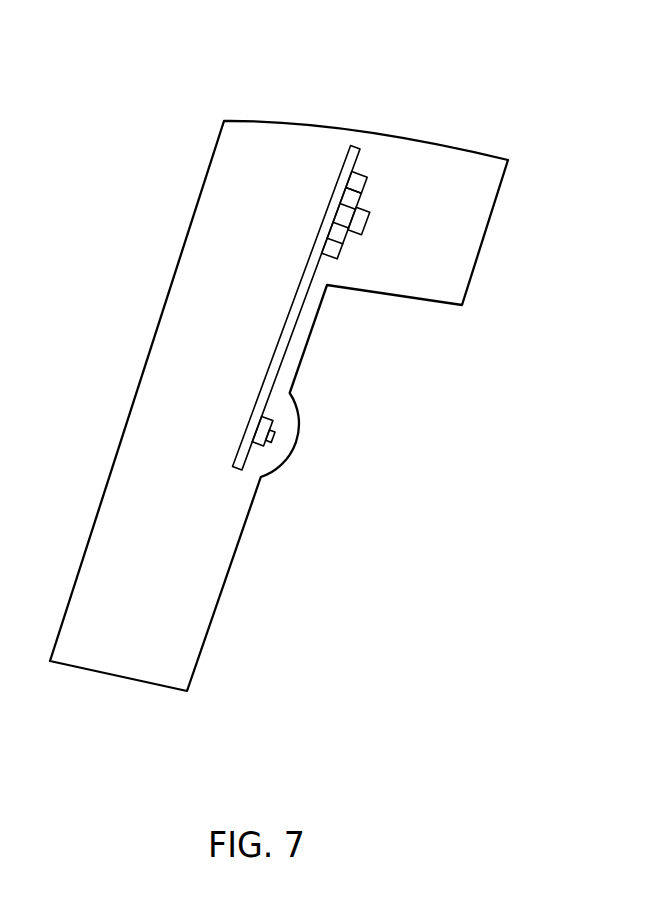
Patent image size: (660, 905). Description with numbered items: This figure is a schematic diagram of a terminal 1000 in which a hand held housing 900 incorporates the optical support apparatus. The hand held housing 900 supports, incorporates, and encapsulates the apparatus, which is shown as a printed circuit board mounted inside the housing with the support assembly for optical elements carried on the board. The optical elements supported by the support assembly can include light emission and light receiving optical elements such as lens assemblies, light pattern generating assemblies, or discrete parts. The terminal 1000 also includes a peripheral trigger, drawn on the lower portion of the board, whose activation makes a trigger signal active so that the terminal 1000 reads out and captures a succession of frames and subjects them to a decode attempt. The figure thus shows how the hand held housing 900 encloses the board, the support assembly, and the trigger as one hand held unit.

The terminal 1000 is at (355, 356).
The hand held housing 900 is at (440, 145).